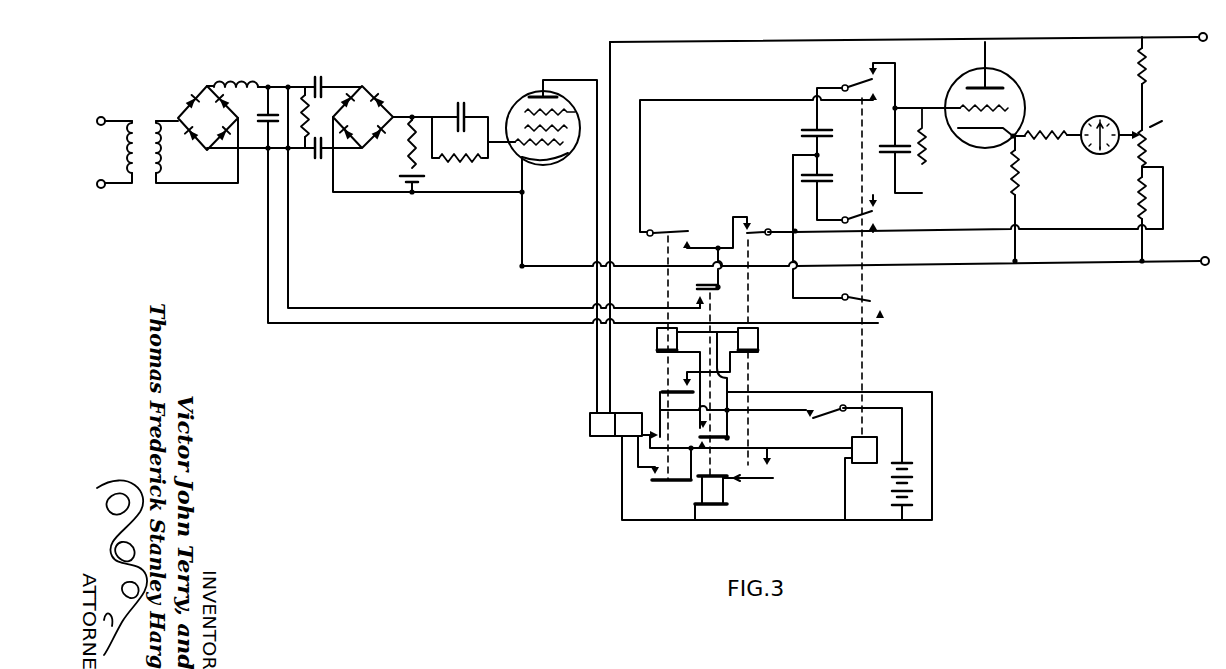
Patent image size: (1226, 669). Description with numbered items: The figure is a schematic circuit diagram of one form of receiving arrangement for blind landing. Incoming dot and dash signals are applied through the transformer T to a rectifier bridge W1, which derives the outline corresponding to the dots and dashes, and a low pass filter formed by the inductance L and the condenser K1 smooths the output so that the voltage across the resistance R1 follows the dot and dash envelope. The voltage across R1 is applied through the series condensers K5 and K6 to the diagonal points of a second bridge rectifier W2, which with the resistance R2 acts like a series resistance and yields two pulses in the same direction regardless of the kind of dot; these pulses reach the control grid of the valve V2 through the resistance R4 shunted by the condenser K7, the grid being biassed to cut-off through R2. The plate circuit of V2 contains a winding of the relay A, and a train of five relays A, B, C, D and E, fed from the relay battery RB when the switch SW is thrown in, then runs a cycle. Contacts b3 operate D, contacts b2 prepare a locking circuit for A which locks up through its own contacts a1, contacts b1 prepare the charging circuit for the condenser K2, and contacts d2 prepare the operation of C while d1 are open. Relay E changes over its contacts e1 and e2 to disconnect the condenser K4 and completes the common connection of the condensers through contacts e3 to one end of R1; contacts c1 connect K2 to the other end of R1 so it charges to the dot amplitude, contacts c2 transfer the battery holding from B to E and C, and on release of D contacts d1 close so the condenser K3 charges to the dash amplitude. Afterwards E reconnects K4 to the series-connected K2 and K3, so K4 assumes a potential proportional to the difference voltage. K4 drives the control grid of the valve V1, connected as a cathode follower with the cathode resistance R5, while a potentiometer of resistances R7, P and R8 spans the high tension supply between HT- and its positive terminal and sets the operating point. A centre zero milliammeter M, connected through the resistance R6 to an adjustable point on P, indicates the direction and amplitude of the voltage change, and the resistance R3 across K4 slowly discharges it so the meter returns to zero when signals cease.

The transformer T is at (129, 146).
The rectifier bridge W1 is at (208, 118).
The low pass filter inductance L is at (234, 77).
The low pass filter condenser K1 is at (264, 118).
The condenser K5 is at (324, 80).
The resistance R1 is at (314, 116).
The condenser K6 is at (316, 157).
The second bridge rectifier W2 is at (363, 117).
The resistance R2 is at (406, 152).
The condenser K7 is at (458, 104).
The resistance R4 is at (460, 172).
The valve V2 is at (531, 83).
The valve V1 is at (1004, 82).
The resistance R6 is at (1046, 125).
The centre zero milliammeter M is at (1109, 119).
The resistance R7 is at (1136, 62).
The resistance P is at (1151, 142).
The resistance R8 is at (1138, 187).
The resistance R5 is at (1020, 185).
The resistance R3 is at (928, 145).
The condenser K2 is at (827, 137).
The condenser K3 is at (827, 182).
The condenser K4 is at (890, 147).
The relay E contacts e1 is at (882, 81).
The relay E contacts e2 is at (882, 217).
The relay E contacts e3 is at (874, 306).
The relay B contacts b1 is at (675, 235).
The relay D contacts d1 is at (757, 238).
The relay C contacts c1 is at (726, 297).
The relay A is at (616, 424).
The relay B is at (667, 340).
The relay C is at (711, 490).
The relay D is at (748, 340).
The relay E is at (864, 450).
The relay B contacts b3 is at (666, 386).
The relay A contacts a1 is at (656, 422).
The relay C contacts c2 is at (734, 441).
The relay B contacts b2 is at (656, 483).
The relay D contacts d2 is at (763, 471).
The switch SW is at (826, 421).
The relay battery RB is at (887, 484).
The high tension supply negative terminal HT- is at (1200, 275).